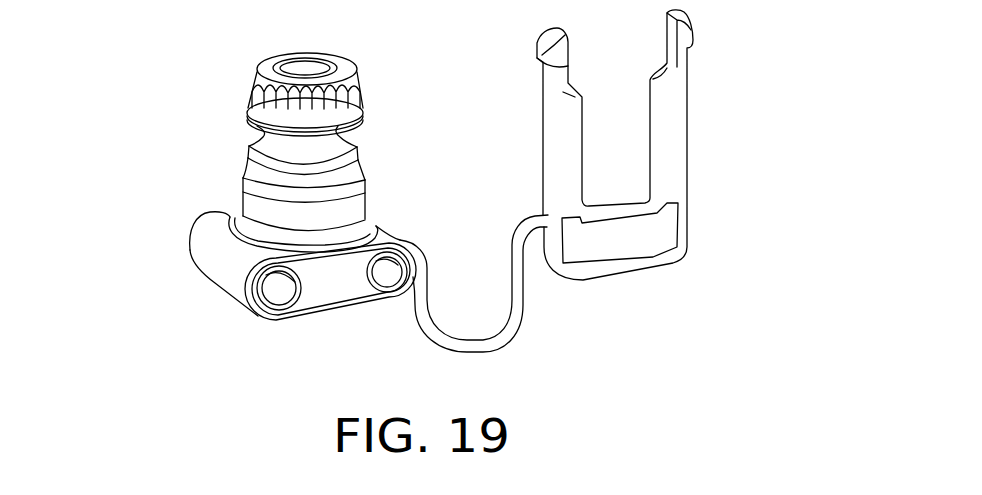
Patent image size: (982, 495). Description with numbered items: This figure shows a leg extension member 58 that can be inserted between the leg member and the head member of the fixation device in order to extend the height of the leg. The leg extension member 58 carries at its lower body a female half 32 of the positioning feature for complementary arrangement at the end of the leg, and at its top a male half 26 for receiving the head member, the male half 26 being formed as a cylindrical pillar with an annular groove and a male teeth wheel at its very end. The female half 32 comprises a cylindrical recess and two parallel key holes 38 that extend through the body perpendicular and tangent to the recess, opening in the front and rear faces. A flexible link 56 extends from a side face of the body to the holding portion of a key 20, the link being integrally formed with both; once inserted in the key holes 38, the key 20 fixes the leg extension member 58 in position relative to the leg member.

The key 20 is at (708, 43).
The male half 26 is at (237, 55).
The female half 32 is at (288, 324).
The key holes 38 is at (287, 290).
The flexible link 56 is at (513, 300).
The leg extension member 58 is at (157, 118).